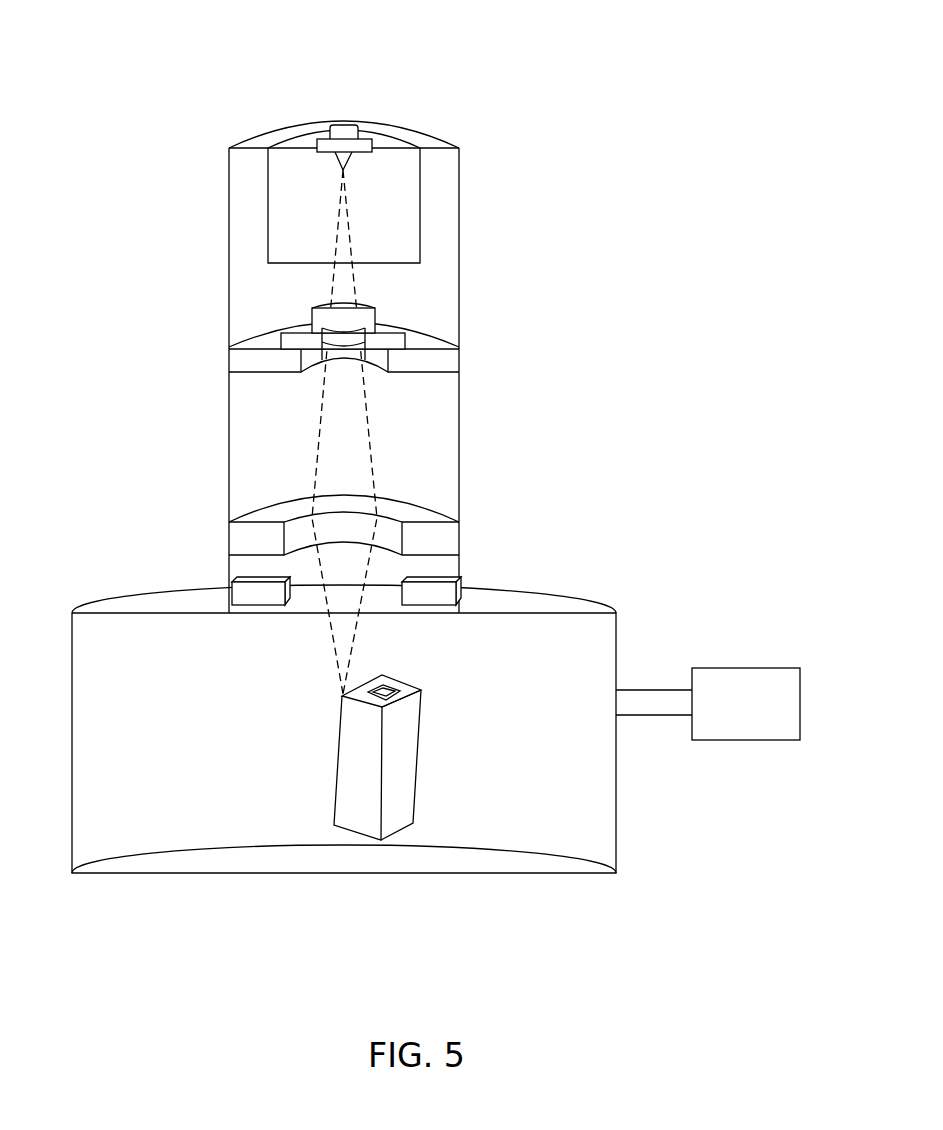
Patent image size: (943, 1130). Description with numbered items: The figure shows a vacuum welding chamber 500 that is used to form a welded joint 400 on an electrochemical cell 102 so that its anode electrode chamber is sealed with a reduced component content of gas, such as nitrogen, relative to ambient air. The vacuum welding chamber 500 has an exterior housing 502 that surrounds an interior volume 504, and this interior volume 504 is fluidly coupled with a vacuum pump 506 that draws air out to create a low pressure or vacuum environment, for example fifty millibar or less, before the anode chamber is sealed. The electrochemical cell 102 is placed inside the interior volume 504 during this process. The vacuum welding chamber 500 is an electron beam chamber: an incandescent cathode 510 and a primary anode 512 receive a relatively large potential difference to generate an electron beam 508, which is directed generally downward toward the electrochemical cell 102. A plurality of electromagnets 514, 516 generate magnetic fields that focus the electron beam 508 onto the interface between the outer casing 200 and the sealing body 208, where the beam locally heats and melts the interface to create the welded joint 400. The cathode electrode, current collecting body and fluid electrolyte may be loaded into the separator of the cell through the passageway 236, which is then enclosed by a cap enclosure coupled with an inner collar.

The vacuum welding chamber 500 is at (436, 436).
The exterior housing 502 is at (229, 204).
The interior volume 504 is at (287, 673).
The vacuum pump 506 is at (760, 740).
The electron beam 508 is at (373, 427).
The incandescent cathode 510 is at (351, 169).
The primary anode 512 is at (383, 317).
The electromagnet 514 is at (462, 517).
The electromagnet 516 is at (460, 578).
The electrochemical cell 102 is at (423, 758).
The outer casing 200 is at (405, 795).
The sealing body 208 is at (359, 703).
The welded joint 400 is at (407, 697).
The passageway 236 is at (386, 690).